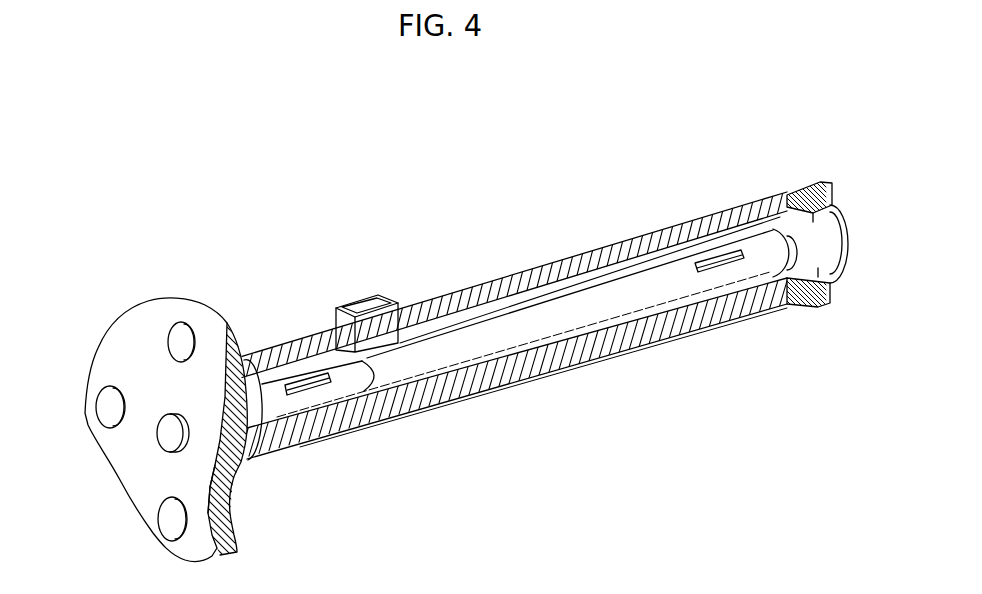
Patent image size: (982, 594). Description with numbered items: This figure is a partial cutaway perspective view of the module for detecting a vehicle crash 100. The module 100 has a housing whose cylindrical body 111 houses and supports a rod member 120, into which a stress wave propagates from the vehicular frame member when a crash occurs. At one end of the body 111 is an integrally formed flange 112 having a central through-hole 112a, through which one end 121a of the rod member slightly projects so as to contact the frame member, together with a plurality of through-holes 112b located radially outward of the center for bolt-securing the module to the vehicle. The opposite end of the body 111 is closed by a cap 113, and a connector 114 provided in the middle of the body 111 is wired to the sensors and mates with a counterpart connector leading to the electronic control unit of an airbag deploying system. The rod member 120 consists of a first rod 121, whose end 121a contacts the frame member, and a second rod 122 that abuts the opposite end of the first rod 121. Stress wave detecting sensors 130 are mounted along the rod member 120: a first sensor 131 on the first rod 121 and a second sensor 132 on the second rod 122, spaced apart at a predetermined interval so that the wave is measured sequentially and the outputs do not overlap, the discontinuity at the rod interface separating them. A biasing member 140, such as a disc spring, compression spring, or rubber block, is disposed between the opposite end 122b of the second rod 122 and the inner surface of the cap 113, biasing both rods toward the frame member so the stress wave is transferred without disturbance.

The module for detecting a vehicle crash 100 is at (214, 236).
The cylindrical body 111 is at (628, 348).
The flange 112 is at (232, 538).
The through-hole of the flange 112a is at (230, 493).
The through-holes for bolt-securing 112b is at (168, 524).
The cap 113 is at (807, 183).
The connector 114 is at (410, 338).
The rod member 120 is at (461, 511).
The first rod 121 is at (330, 392).
The one end of the first rod 121a is at (165, 435).
The second rod 122 is at (398, 374).
The opposite end of the second rod 122b is at (787, 262).
The stress wave detecting sensors 130 is at (682, 140).
The first sensor 131 is at (305, 383).
The second sensor 132 is at (714, 258).
The biasing member 140 is at (810, 298).